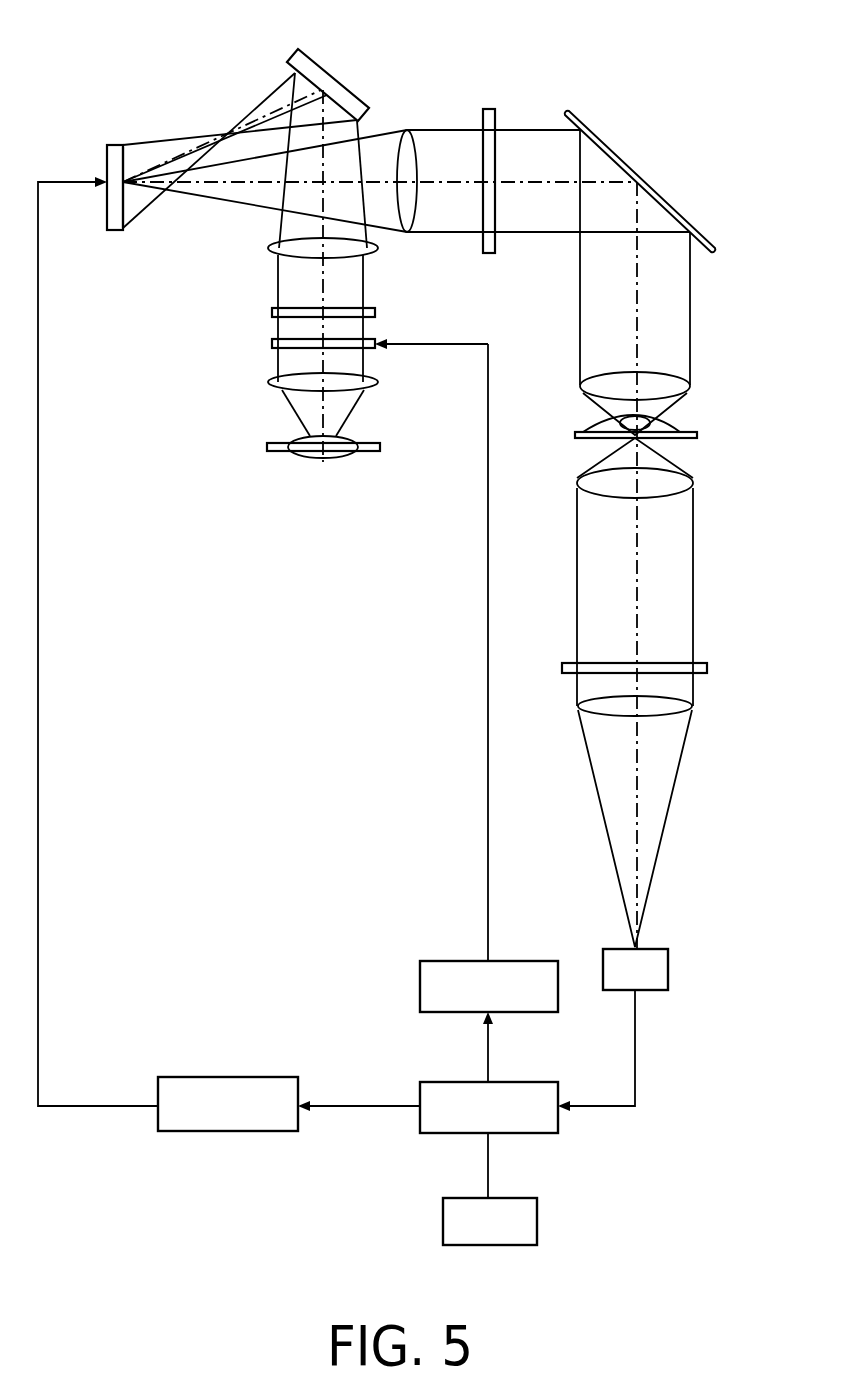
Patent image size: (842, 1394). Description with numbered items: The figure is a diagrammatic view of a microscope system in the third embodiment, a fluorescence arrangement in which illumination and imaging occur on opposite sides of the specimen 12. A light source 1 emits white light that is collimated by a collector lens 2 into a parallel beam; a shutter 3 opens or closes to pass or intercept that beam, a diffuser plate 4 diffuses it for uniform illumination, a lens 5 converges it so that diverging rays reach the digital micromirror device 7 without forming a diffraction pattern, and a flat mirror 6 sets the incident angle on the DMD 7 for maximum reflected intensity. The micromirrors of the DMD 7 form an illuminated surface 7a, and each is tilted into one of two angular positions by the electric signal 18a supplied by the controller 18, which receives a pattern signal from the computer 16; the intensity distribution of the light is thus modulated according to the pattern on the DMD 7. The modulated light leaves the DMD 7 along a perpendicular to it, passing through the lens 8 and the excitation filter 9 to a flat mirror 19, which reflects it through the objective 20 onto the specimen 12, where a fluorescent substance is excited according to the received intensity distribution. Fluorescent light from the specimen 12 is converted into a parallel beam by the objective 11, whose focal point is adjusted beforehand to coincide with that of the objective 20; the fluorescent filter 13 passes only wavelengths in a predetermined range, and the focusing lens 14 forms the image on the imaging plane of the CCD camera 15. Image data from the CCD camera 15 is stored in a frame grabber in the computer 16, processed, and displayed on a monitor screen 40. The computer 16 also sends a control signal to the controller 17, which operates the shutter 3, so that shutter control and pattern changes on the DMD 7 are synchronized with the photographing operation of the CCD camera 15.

The light source 1 is at (267, 447).
The collector lens 2 is at (268, 384).
The shutter 3 is at (272, 344).
The diffuser plate 4 is at (272, 312).
The lens 5 is at (268, 250).
The flat mirror 6 is at (293, 53).
The digital micromirror device 7 is at (106, 168).
The illuminated surface 7a is at (128, 157).
The lens 8 is at (407, 130).
The excitation filter 9 is at (489, 109).
The objective 11 is at (693, 483).
The specimen 12 is at (697, 435).
The fluorescent filter 13 is at (707, 668).
The focusing lens 14 is at (692, 706).
The CCD camera 15 is at (668, 970).
The computer 16 is at (433, 1133).
The controller 17 is at (420, 985).
The controller 18 is at (230, 1131).
The electric signal 18a is at (40, 742).
The flat mirror 19 is at (607, 145).
The objective 20 is at (692, 388).
The monitor screen 40 is at (537, 1223).